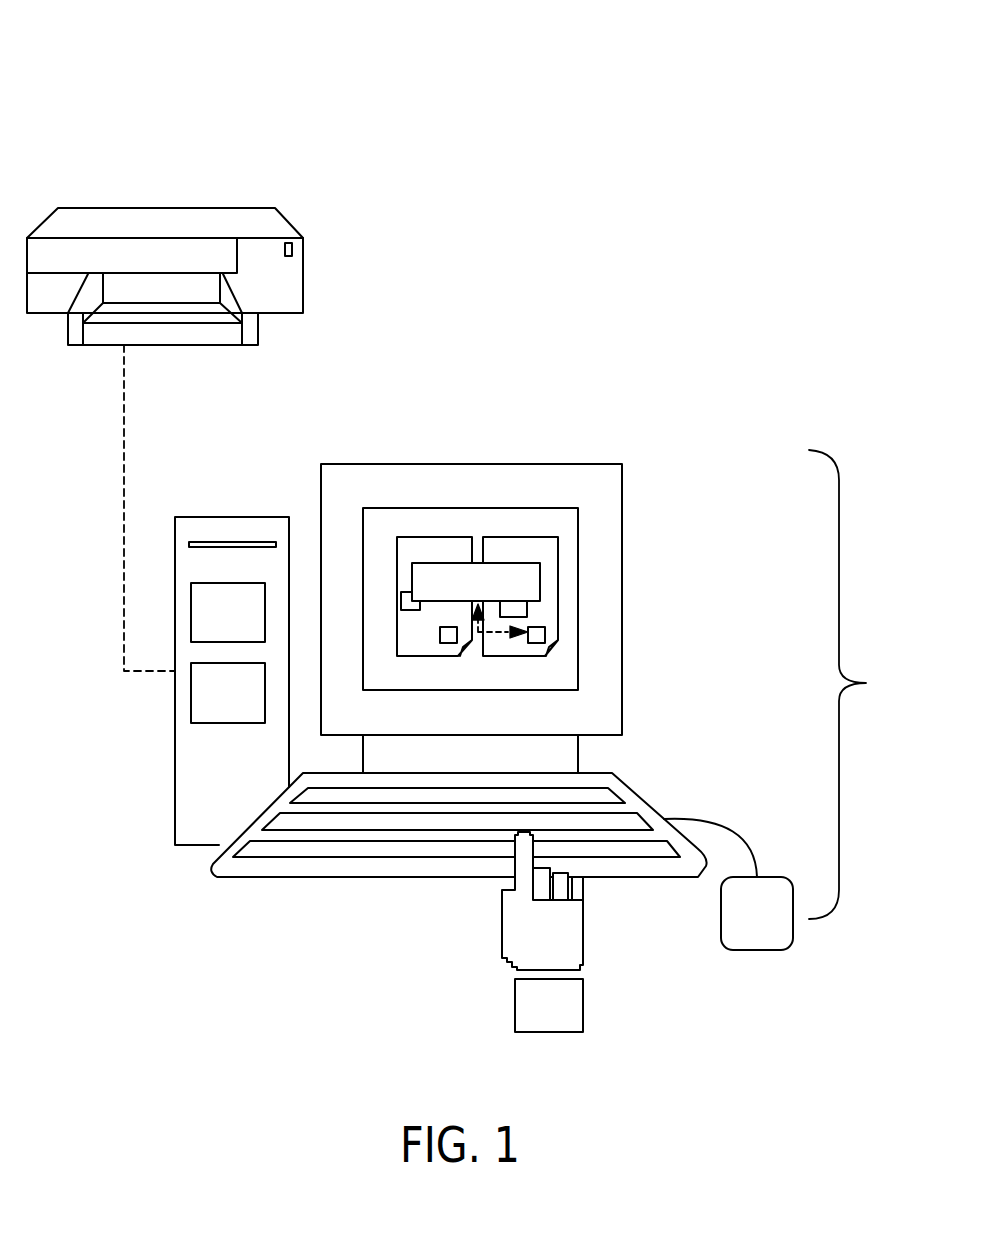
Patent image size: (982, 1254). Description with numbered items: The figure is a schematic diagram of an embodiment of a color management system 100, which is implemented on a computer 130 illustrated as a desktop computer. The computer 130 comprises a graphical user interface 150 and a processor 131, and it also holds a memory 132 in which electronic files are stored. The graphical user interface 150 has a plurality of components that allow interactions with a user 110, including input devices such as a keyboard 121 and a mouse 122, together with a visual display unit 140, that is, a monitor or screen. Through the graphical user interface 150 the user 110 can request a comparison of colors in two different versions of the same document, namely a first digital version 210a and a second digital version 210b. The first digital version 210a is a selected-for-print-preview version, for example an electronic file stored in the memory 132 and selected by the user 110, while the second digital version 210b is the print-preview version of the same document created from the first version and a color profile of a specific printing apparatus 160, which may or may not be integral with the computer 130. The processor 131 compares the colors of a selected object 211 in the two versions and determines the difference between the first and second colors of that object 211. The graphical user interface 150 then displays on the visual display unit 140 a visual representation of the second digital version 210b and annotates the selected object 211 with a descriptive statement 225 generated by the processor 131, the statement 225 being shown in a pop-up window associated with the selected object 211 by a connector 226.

The color management system 100 is at (120, 62).
The user 110 is at (543, 1033).
The keyboard 121 is at (753, 951).
The mouse 122 is at (432, 878).
The computer 130 is at (194, 681).
The processor 131 is at (212, 624).
The memory 132 is at (212, 704).
The visual display unit 140 is at (622, 680).
The graphical user interface 150 is at (857, 684).
The printing apparatus 160 is at (145, 208).
The first digital version 210a is at (437, 537).
The second digital version 210b is at (512, 537).
The selected object 211 is at (448, 643).
The descriptive statement 225 is at (540, 582).
The connector 226 is at (495, 634).